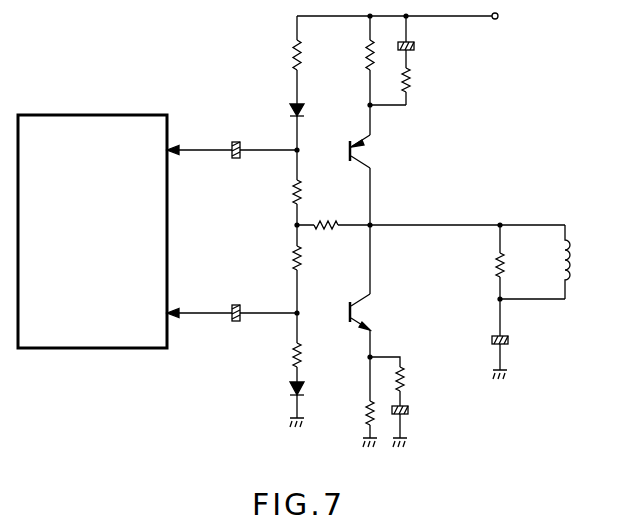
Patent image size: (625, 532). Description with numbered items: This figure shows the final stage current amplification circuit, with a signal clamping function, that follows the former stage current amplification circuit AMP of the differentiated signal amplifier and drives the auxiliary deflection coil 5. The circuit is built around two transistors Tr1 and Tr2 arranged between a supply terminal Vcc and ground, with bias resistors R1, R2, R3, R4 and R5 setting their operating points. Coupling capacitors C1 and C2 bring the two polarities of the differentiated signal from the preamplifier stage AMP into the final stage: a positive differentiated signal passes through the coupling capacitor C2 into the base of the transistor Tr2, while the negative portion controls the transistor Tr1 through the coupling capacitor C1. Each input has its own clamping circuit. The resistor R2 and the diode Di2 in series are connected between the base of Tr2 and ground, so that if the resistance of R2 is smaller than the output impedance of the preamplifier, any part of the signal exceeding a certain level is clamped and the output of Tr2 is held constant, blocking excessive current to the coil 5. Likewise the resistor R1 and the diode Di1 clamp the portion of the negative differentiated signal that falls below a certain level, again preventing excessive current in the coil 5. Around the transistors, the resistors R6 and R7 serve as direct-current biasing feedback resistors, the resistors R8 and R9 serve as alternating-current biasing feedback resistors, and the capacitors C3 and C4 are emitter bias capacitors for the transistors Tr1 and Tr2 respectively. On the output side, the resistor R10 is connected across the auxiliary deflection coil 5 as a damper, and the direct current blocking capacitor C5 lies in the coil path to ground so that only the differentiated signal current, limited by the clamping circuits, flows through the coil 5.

The former stage current amplification circuit AMP is at (84, 336).
The supply voltage terminal Vcc is at (513, 17).
The bias resistor R1 is at (311, 56).
The bias resistor R2 is at (311, 356).
The bias resistor R3 is at (311, 192).
The bias resistor R4 is at (311, 258).
The bias resistor R5 is at (331, 215).
The d.c. biasing feedback resistor R6 is at (358, 56).
The d.c. biasing feedback resistor R7 is at (353, 413).
The a.c. biasing feedback resistor R8 is at (419, 81).
The a.c. biasing feedback resistor R9 is at (414, 380).
The damper R10 is at (483, 265).
The coupling capacitor C1 is at (239, 138).
The coupling capacitor C2 is at (237, 301).
The emitter bias capacitor C3 is at (419, 52).
The emitter bias capacitor C4 is at (414, 414).
The direct current blocking capacitor C5 is at (514, 343).
The diode Di1 is at (314, 112).
The diode Di2 is at (275, 388).
The transistor Tr1 is at (377, 151).
The transistor Tr2 is at (375, 312).
The auxiliary deflection coil 5 is at (570, 242).